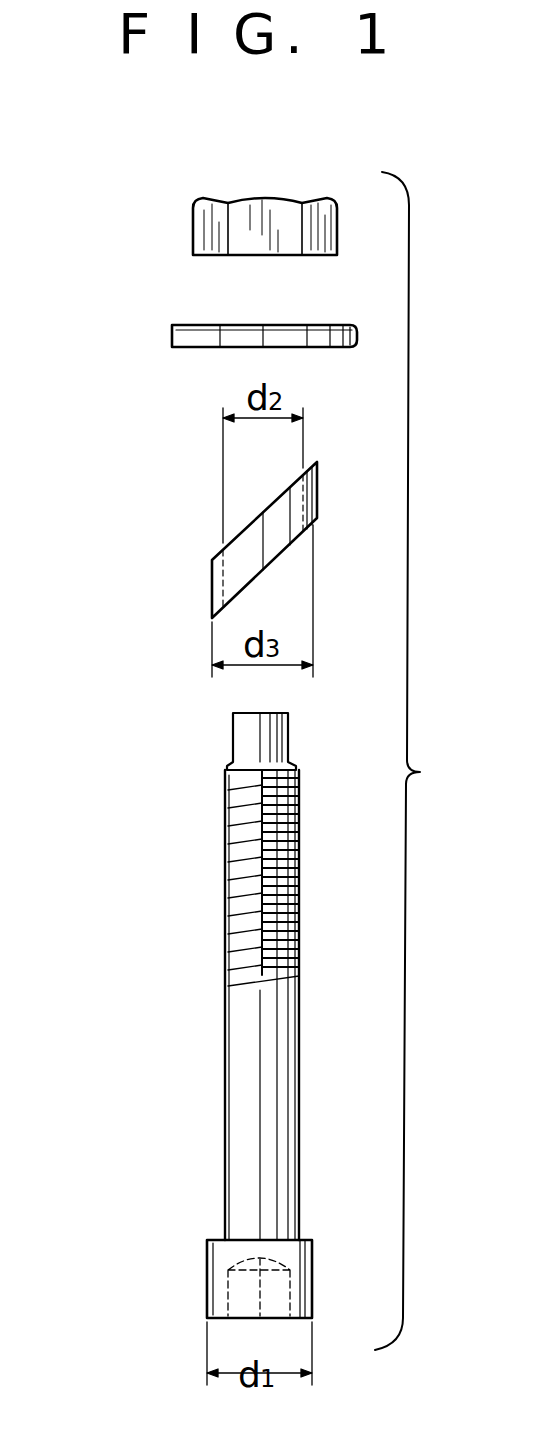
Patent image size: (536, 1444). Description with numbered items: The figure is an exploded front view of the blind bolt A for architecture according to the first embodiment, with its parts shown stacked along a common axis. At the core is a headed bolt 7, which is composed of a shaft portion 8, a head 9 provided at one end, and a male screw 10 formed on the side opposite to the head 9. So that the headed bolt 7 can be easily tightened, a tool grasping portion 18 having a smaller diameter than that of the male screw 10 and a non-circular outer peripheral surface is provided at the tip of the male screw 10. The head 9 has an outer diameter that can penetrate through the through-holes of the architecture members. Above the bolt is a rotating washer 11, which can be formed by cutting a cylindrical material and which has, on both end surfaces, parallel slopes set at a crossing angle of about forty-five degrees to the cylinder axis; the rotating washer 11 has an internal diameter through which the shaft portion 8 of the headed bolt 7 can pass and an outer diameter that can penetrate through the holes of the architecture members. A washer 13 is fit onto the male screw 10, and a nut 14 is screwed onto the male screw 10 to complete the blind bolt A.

The headed bolt 7 is at (179, 1009).
The shaft portion 8 is at (247, 1043).
The head 9 is at (217, 1277).
The male screw 10 is at (250, 888).
The rotating washer 11 is at (213, 588).
The washer 13 is at (178, 333).
The nut 14 is at (205, 223).
The tool grasping portion 18 is at (250, 733).
The blind bolt A is at (419, 761).